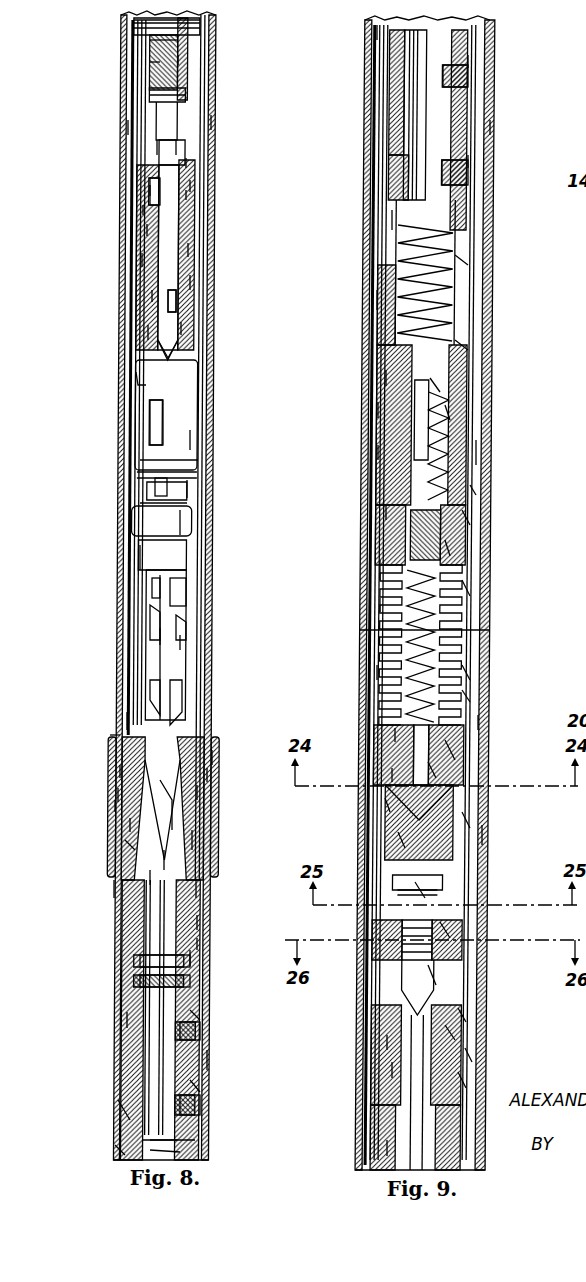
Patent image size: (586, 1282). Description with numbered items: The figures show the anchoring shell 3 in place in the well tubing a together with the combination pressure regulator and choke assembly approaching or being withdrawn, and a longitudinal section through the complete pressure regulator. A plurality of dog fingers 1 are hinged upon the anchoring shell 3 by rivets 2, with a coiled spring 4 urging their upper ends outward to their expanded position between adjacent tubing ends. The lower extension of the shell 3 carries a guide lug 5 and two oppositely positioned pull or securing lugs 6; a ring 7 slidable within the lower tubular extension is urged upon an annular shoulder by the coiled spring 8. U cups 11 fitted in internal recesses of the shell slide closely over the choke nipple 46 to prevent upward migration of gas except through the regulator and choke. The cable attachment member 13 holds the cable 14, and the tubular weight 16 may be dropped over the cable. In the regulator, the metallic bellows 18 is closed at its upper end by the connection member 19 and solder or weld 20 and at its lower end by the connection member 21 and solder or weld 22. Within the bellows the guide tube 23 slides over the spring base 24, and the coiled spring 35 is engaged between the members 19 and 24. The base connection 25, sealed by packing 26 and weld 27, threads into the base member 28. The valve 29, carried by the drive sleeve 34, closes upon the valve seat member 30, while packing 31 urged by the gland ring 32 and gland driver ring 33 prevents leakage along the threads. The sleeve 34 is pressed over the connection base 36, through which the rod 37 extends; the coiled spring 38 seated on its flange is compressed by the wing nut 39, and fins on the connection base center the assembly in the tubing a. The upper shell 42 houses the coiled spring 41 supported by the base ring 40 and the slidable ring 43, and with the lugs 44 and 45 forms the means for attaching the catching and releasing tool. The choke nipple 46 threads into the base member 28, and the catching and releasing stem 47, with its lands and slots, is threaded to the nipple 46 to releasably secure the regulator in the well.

In FIG. 8, the dog fingers 1 is at (192, 840).
In FIG. 8, the rivets 2 is at (152, 878).
In FIG. 8, the anchoring shell 3 is at (190, 958).
In FIG. 8, the coiled spring 4 is at (197, 923).
In FIG. 8, the guide lug 5 is at (202, 1030).
In FIG. 8, the pull or securing lugs 6 is at (192, 1103).
In FIG. 8, the ring 7 is at (197, 1140).
In FIG. 8, the coiled spring 8 is at (117, 1150).
In FIG. 8, the U cups 11 is at (126, 961).
In FIG. 8, the cable attachment member 13 is at (177, 60).
In FIG. 8, the cable 14 is at (118, 47).
In FIG. 8, the tubular weight 16 is at (145, 22).
In FIG. 9, the metallic bellows 18 is at (470, 588).
In FIG. 9, the connection member 19 is at (470, 518).
In FIG. 9, the solder or weld 20 is at (386, 512).
In FIG. 9, the connection member 21 is at (450, 750).
In FIG. 9, the solder or weld 22 is at (480, 724).
In FIG. 9, the guide tube 23 is at (470, 672).
In FIG. 9, the spring base 24 is at (435, 770).
In FIG. 9, the base connection 25 is at (482, 835).
In FIG. 9, the packing 26 is at (387, 805).
In FIG. 9, the weld 27 is at (400, 840).
In FIG. 8, the base member 28 is at (180, 523).
In FIG. 9, the base member 28 is at (466, 1080).
In FIG. 9, the valve 29 is at (432, 975).
In FIG. 9, the valve seat member 30 is at (452, 1033).
In FIG. 9, the packing 31 is at (387, 1043).
In FIG. 9, the gland ring 32 is at (472, 1055).
In FIG. 9, the gland driver ring 33 is at (392, 1070).
In FIG. 8, the drive sleeve 34 is at (187, 488).
In FIG. 9, the drive sleeve 34 is at (380, 570).
In FIG. 9, the coiled spring 35 is at (377, 672).
In FIG. 8, the connection base 36 is at (190, 440).
In FIG. 9, the connection base 36 is at (378, 452).
In FIG. 9, the rod 37 is at (476, 452).
In FIG. 9, the coiled spring 38 is at (450, 412).
In FIG. 9, the wing nut 39 is at (440, 385).
In FIG. 9, the base ring 40 is at (470, 346).
In FIG. 8, the coiled spring 41 is at (178, 351).
In FIG. 9, the coiled spring 41 is at (377, 300).
In FIG. 8, the upper shell 42 is at (190, 282).
In FIG. 9, the upper shell 42 is at (470, 263).
In FIG. 8, the ring 43 is at (148, 332).
In FIG. 9, the ring 43 is at (392, 220).
In FIG. 8, the lug 44 is at (142, 260).
In FIG. 9, the lug 44 is at (470, 175).
In FIG. 8, the lug 45 is at (186, 195).
In FIG. 9, the lug 45 is at (470, 76).
In FIG. 8, the choke nipple 46 is at (150, 540).
In FIG. 9, the choke nipple 46 is at (387, 1148).
In FIG. 8, the catching and releasing stem 47 is at (160, 665).
In FIG. 8, the tubing a is at (211, 122).
In FIG. 9, the tubing a is at (492, 127).